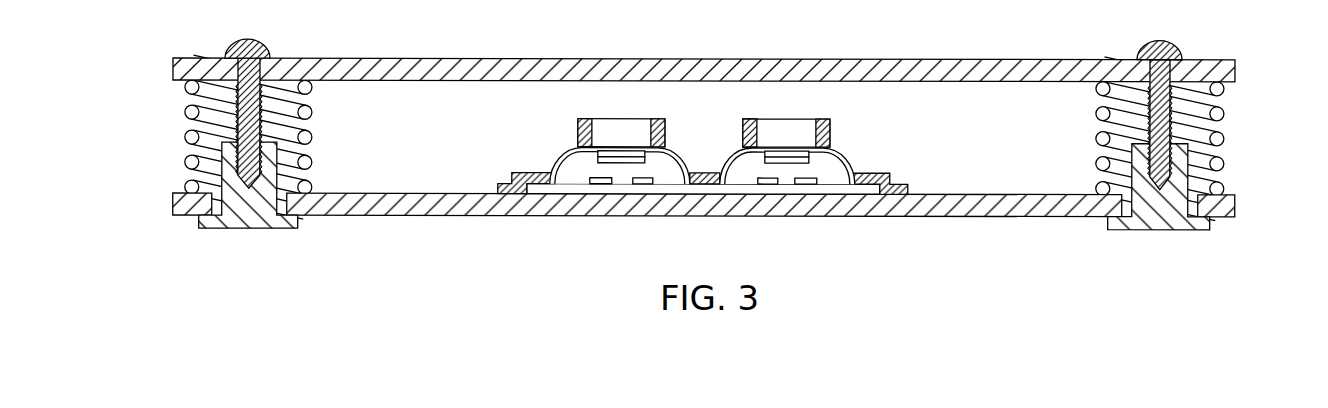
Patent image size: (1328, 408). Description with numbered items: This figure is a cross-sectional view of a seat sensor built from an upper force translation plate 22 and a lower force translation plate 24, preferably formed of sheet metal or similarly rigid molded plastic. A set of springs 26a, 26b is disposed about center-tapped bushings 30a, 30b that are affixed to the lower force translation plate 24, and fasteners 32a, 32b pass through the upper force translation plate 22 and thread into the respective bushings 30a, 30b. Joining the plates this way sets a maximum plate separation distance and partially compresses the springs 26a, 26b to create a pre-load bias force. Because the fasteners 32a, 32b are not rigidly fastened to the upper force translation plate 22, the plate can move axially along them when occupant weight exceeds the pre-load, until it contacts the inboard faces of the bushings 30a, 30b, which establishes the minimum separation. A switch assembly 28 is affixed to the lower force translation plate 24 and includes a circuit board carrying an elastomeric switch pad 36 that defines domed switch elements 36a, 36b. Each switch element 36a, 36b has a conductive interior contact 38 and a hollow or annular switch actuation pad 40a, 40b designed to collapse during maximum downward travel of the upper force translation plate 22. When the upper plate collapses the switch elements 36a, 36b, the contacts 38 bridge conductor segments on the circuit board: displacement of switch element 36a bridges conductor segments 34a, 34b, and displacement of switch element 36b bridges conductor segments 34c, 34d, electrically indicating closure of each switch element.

The upper force translation plate 22 is at (860, 62).
The lower force translation plate 24 is at (955, 218).
The spring 26a is at (185, 137).
The spring 26b is at (1224, 136).
The switch assembly 28 is at (512, 128).
The center-tapped bushing 30a is at (248, 228).
The center-tapped bushing 30b is at (1160, 228).
The fastener 32a is at (251, 137).
The fastener 32b is at (1152, 140).
The conductor segment 34a is at (599, 185).
The conductor segment 34b is at (645, 185).
The conductor segment 34c is at (765, 185).
The conductor segment 34d is at (808, 185).
The elastomeric switch pad 36 is at (522, 172).
The switch element 36a is at (564, 151).
The switch element 36b is at (730, 151).
The conductive interior contact 38 is at (620, 163).
The switch actuation pad 40a is at (584, 118).
The switch actuation pad 40b is at (750, 118).